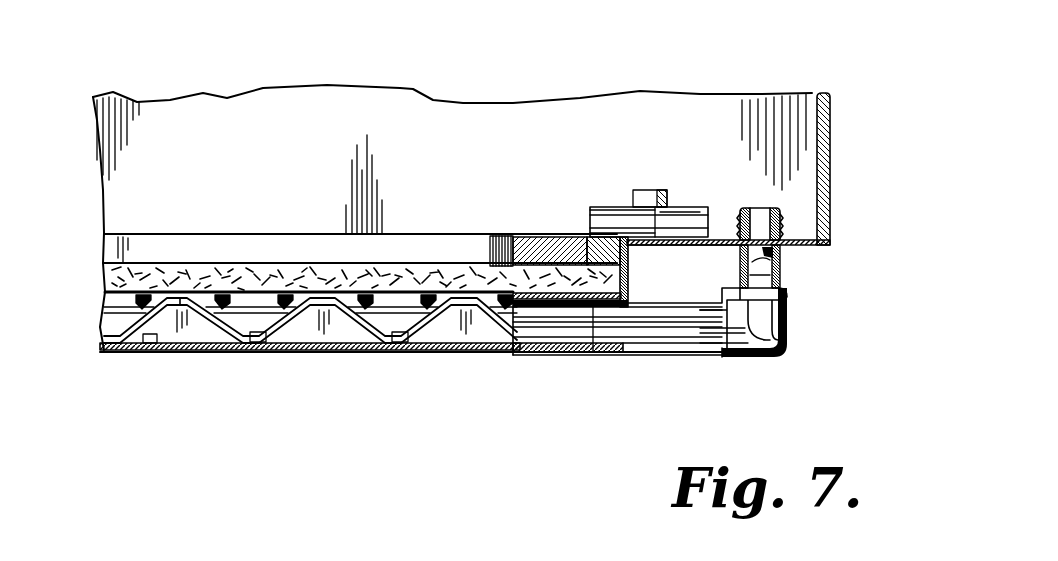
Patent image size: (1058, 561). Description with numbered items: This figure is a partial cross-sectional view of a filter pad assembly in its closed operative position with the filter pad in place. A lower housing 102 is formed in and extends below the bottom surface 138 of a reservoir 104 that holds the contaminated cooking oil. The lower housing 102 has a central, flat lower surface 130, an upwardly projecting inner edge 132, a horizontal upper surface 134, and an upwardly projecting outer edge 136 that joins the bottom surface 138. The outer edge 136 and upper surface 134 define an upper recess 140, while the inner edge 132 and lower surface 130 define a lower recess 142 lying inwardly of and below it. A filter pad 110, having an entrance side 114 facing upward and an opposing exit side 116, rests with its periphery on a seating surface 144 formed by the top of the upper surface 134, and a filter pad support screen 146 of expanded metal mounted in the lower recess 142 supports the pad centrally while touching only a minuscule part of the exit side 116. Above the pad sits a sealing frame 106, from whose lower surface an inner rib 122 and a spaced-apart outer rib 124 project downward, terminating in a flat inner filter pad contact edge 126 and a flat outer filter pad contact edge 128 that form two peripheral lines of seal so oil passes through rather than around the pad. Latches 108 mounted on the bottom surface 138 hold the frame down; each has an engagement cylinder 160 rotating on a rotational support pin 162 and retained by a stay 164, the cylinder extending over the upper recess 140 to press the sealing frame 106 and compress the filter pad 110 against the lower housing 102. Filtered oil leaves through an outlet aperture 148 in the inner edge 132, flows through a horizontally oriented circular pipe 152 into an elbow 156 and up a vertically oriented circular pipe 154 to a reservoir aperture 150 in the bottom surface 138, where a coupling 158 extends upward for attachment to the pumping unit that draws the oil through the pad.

The lower housing 102 is at (176, 350).
The reservoir 104 is at (826, 101).
The sealing frame 106 is at (525, 234).
The latches 108 is at (707, 201).
The filter pad 110 is at (226, 273).
The entrance side 114 is at (289, 268).
The exit side 116 is at (310, 350).
The inner rib 122 is at (541, 235).
The outer rib 124 is at (578, 235).
The inner filter pad contact edge 126 is at (507, 267).
The outer filter pad contact edge 128 is at (553, 340).
The lower surface 130 is at (363, 353).
The inner edge 132 is at (487, 263).
The upper surface 134 is at (610, 340).
The outer edge 136 is at (650, 355).
The bottom surface 138 is at (723, 240).
The upper recess 140 is at (632, 258).
The lower recess 142 is at (148, 343).
The seating surface 144 is at (533, 340).
The filter pad support screen 146 is at (182, 300).
The outlet aperture 148 is at (492, 350).
The reservoir aperture 150 is at (781, 262).
The horizontally oriented circular pipe 152 is at (707, 352).
The vertically oriented circular pipe 154 is at (781, 280).
The elbow 156 is at (783, 350).
The coupling 158 is at (781, 218).
The engagement cylinder 160 is at (612, 205).
The rotational support pin 162 is at (677, 202).
The stay 164 is at (655, 190).